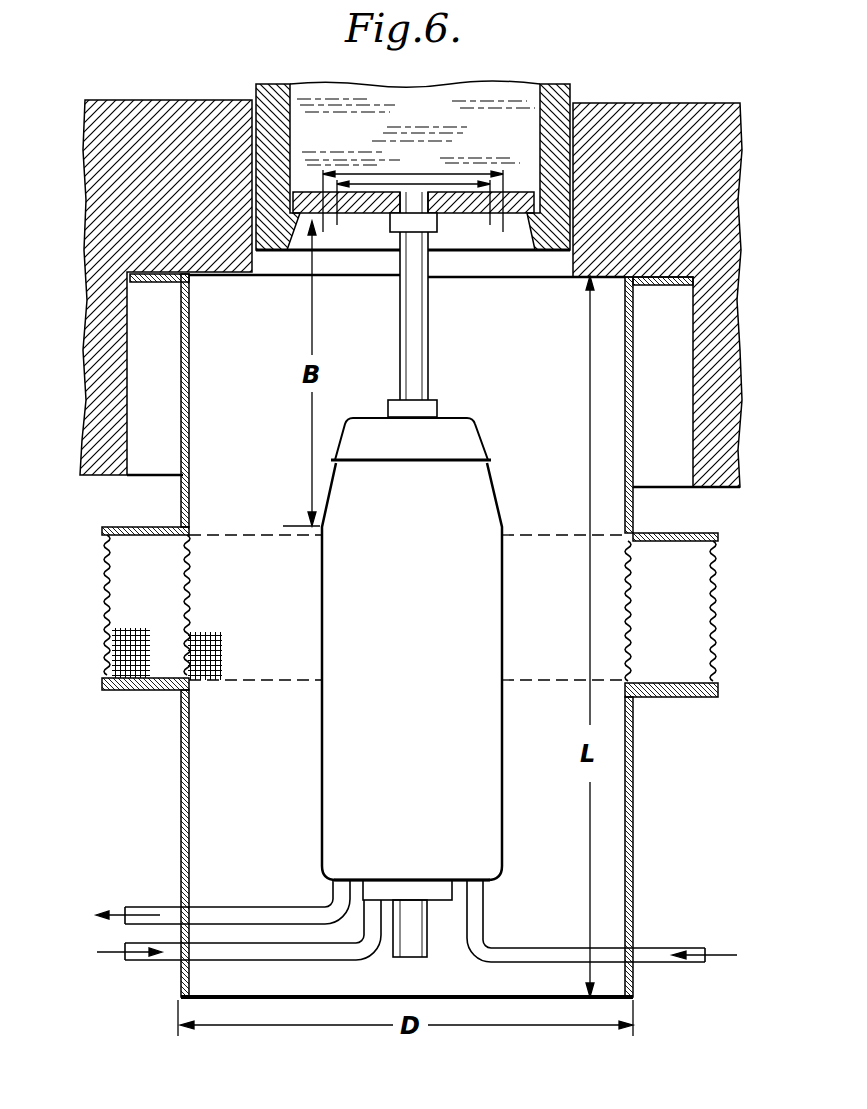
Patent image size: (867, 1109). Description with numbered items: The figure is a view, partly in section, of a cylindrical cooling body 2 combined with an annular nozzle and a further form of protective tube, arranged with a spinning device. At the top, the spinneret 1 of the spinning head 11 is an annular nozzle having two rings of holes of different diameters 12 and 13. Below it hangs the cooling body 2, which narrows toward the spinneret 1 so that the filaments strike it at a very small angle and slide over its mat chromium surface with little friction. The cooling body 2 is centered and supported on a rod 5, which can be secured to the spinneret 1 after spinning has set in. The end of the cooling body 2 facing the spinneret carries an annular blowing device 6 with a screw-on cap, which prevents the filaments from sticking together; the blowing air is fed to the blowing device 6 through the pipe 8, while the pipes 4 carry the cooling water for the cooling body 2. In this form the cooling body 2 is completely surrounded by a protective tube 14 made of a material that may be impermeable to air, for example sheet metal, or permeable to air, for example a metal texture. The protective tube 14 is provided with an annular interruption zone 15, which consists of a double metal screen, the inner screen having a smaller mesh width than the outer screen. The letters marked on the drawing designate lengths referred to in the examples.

The spinneret 1 is at (511, 236).
The cooling body 2 is at (338, 781).
The pipes for the cooling water 4 is at (172, 912).
The rod 5 is at (428, 323).
The annular blowing device 6 is at (462, 428).
The pipe 8 is at (172, 958).
The spinning head 11 is at (553, 96).
The ring of holes 12 is at (460, 213).
The ring of holes 13 is at (444, 192).
The protective tube 14 is at (634, 778).
The annular interruption zone 15 is at (98, 545).